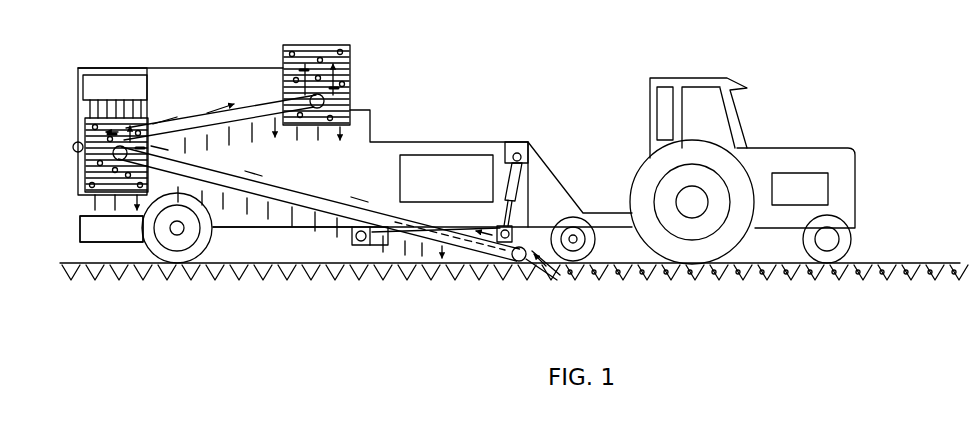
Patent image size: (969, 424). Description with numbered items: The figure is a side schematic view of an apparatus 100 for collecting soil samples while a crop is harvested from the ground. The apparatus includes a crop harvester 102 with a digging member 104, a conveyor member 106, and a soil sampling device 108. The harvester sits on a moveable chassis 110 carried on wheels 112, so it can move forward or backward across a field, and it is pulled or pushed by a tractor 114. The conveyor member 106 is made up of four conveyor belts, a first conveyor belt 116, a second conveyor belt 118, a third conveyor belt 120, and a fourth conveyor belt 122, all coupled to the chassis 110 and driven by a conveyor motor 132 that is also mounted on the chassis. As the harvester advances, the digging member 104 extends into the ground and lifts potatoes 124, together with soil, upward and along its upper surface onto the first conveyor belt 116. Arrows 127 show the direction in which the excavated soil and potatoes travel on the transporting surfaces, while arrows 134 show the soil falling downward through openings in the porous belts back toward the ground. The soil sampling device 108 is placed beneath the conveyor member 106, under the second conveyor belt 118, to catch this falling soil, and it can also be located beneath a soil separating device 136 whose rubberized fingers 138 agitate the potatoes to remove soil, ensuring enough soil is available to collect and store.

The apparatus 100 is at (433, 61).
The crop harvester 102 is at (408, 141).
The digging member 104 is at (536, 267).
The conveyor member 106 is at (330, 197).
The soil sampling device 108 is at (110, 245).
The moveable chassis 110 is at (258, 230).
The wheels 112 is at (165, 252).
The tractor 114 is at (705, 77).
The first conveyor belt 116 is at (395, 224).
The second conveyor belt 118 is at (85, 162).
The third conveyor belt 120 is at (190, 112).
The fourth conveyor belt 122 is at (303, 45).
The potatoes 124 is at (777, 272).
The arrows 127 is at (135, 130).
The conveyor motor 132 is at (447, 155).
The arrows 134 is at (258, 197).
The soil separating device 136 is at (108, 78).
The rubberized fingers 138 is at (85, 112).